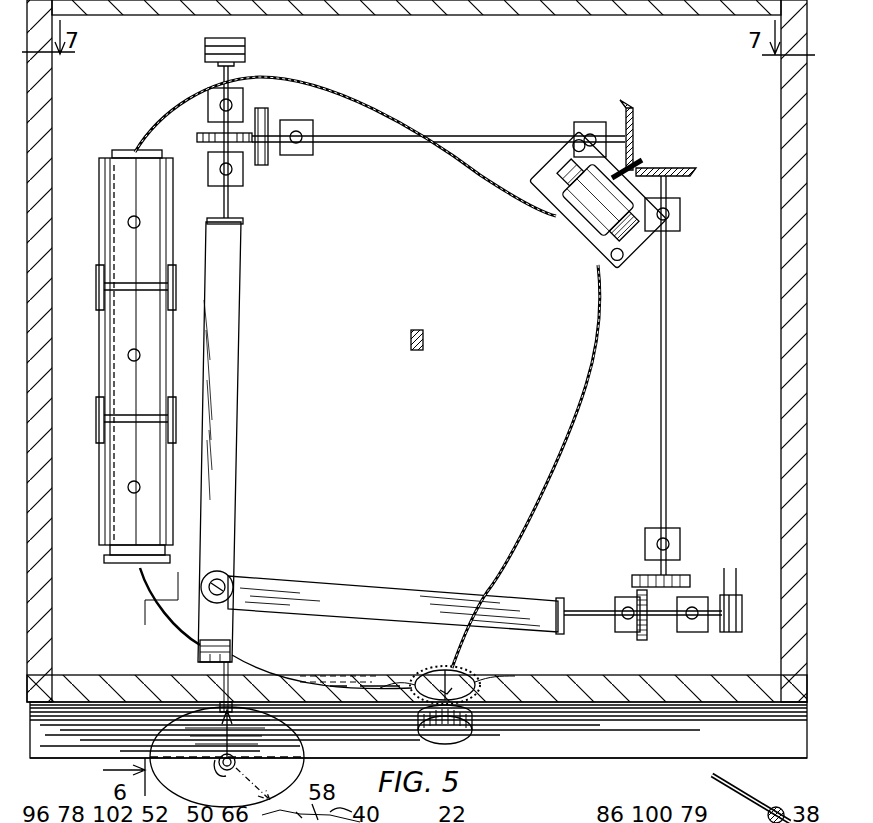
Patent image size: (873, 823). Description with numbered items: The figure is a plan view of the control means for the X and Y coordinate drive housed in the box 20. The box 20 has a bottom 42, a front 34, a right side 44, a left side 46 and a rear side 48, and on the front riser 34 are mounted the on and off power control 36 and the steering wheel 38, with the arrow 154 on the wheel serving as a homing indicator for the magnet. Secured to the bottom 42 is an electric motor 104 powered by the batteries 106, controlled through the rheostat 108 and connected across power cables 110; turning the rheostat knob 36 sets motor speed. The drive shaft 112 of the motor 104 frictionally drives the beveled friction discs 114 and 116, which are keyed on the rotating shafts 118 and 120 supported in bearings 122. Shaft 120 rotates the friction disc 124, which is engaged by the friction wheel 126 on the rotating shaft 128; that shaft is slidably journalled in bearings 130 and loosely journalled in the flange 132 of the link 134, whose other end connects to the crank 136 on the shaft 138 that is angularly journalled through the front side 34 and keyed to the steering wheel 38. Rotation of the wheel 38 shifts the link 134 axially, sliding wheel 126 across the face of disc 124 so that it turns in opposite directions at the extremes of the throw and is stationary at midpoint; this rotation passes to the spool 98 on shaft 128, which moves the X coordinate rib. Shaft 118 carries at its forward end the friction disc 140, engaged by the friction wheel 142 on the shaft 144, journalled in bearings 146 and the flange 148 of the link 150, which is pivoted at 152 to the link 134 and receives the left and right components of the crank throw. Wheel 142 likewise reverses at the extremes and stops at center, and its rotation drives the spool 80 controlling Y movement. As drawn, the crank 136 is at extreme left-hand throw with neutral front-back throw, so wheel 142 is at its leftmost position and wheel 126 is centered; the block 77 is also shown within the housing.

The box 20 is at (664, 742).
The front riser 34 is at (552, 750).
The power control 36 is at (460, 738).
The steering wheel 38 is at (300, 747).
The bottom 42 is at (406, 427).
The right side 44 is at (781, 412).
The left side 46 is at (47, 395).
The rear side 48 is at (612, 12).
The stop block 77 is at (424, 338).
The spool 80 is at (743, 628).
The spool 98 is at (245, 40).
The electric motor 104 is at (578, 250).
The batteries 106 is at (108, 297).
The rheostat 108 is at (432, 680).
The power cables 110 is at (518, 186).
The drive shaft 112 is at (642, 160).
The beveled friction disc 114 is at (680, 168).
The beveled friction disc 116 is at (634, 130).
The rotating shaft 118 is at (666, 310).
The rotating shaft 120 is at (488, 135).
The bearing 122 is at (313, 122).
The friction disc 124 is at (262, 110).
The friction wheel 126 is at (198, 138).
The rotating shaft 128 is at (228, 200).
The bearings 130 is at (212, 100).
The flange 132 is at (243, 221).
The link 134 is at (236, 358).
The crank 136 is at (204, 664).
The shaft 138 is at (228, 690).
The friction disc 140 is at (688, 586).
The friction wheel 142 is at (646, 640).
The shaft 144 is at (598, 618).
The bearings 146 is at (626, 634).
The flange 148 is at (562, 600).
The link 150 is at (527, 600).
The pivot 152 is at (222, 583).
The arrow 154 is at (228, 778).